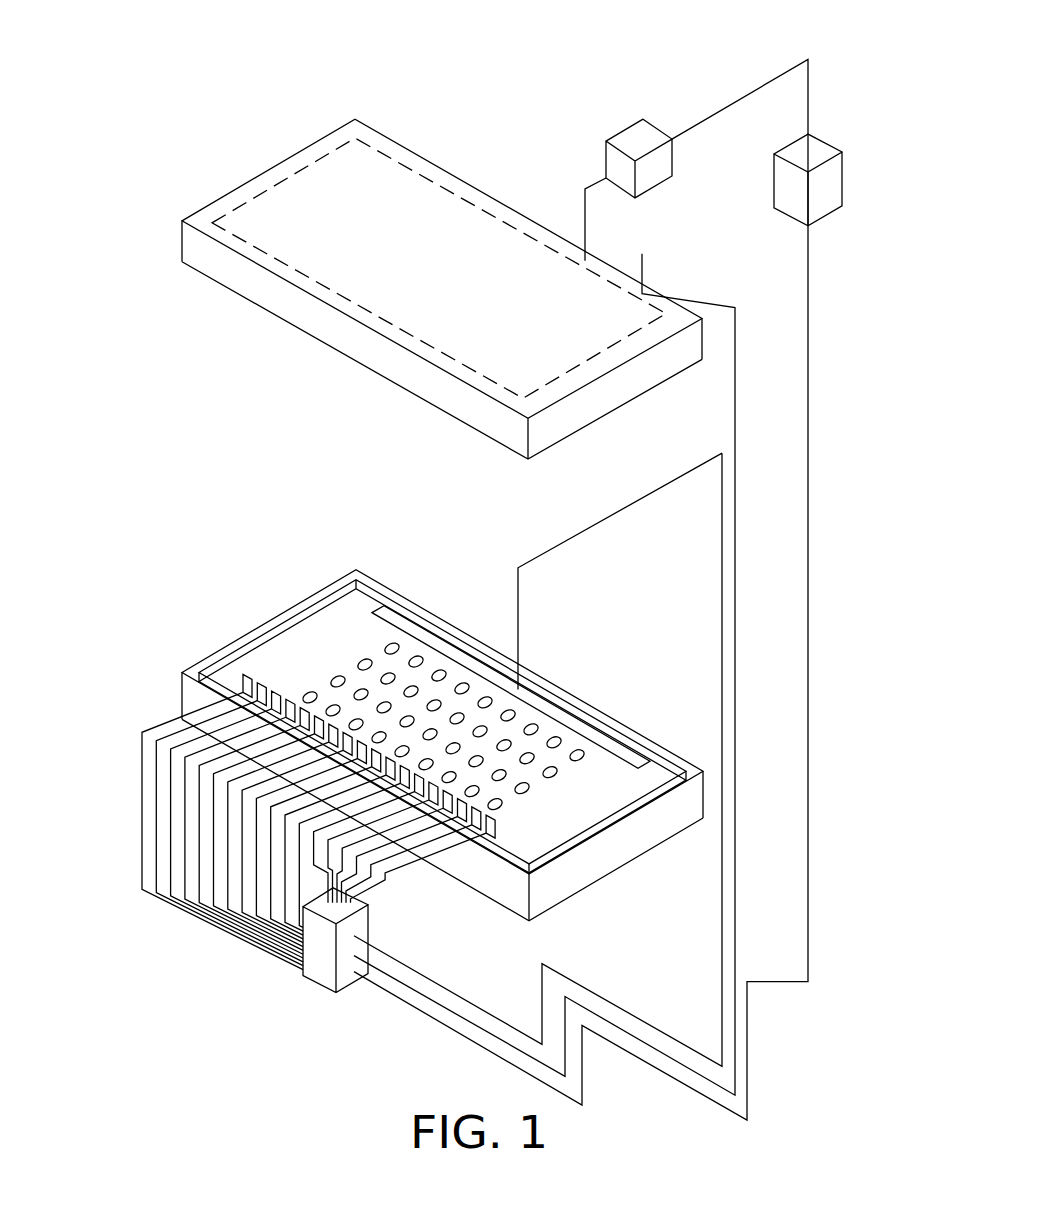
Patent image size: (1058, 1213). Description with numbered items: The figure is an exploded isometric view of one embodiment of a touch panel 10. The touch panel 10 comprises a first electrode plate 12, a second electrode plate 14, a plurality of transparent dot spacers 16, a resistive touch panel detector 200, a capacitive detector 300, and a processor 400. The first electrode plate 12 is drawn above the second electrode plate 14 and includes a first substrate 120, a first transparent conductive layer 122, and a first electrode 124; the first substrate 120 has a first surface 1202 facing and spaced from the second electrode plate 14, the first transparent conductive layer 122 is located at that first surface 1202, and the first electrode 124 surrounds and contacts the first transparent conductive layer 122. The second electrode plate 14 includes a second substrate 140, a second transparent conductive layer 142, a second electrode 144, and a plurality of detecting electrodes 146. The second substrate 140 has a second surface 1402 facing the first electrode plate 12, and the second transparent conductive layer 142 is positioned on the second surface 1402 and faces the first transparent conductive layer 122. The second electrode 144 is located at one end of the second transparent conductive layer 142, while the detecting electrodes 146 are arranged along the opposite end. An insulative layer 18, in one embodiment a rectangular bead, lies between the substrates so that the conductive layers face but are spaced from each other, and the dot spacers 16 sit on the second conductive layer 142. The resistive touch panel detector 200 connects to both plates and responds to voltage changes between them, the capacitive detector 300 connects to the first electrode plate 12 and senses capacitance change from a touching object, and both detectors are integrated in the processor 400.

The touch panel 10 is at (489, 13).
The first electrode plate 12 is at (397, 262).
The first substrate 120 is at (397, 289).
The first transparent conductive layer 122 is at (300, 204).
The first electrode 124 is at (336, 118).
The first surface 1202 is at (292, 328).
The second electrode plate 14 is at (401, 759).
The second substrate 140 is at (192, 695).
The second transparent conductive layer 142 is at (368, 637).
The second electrode 144 is at (383, 613).
The detecting electrodes 146 is at (257, 686).
The second surface 1402 is at (510, 863).
The transparent dot spacers 16 is at (363, 662).
The insulative layer 18 is at (200, 675).
The resistive touch panel detector 200 is at (323, 967).
The capacitive detector 300 is at (635, 135).
The processor 400 is at (789, 187).